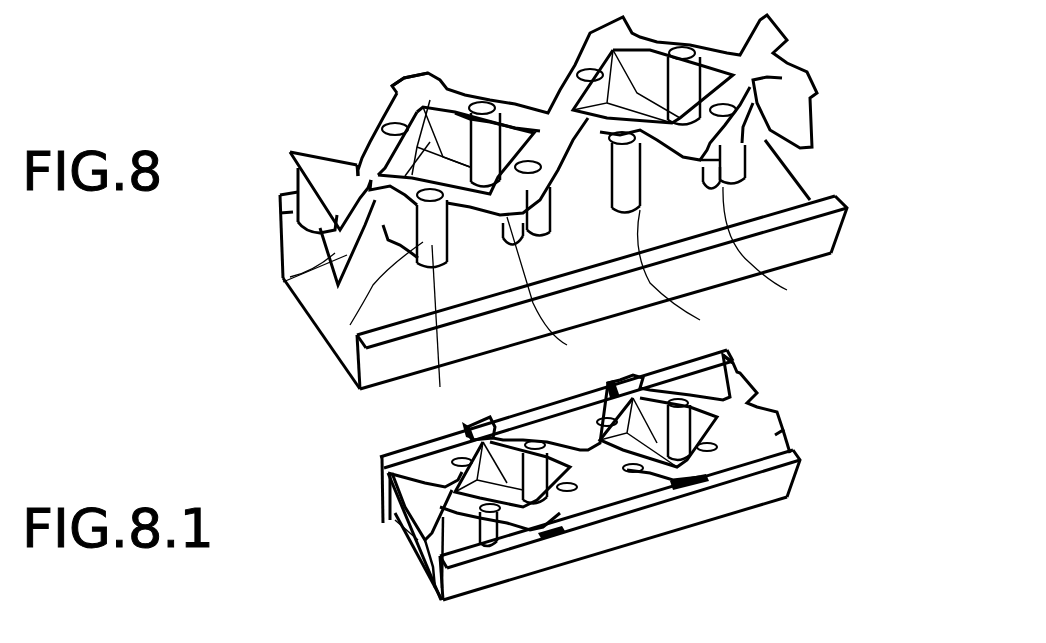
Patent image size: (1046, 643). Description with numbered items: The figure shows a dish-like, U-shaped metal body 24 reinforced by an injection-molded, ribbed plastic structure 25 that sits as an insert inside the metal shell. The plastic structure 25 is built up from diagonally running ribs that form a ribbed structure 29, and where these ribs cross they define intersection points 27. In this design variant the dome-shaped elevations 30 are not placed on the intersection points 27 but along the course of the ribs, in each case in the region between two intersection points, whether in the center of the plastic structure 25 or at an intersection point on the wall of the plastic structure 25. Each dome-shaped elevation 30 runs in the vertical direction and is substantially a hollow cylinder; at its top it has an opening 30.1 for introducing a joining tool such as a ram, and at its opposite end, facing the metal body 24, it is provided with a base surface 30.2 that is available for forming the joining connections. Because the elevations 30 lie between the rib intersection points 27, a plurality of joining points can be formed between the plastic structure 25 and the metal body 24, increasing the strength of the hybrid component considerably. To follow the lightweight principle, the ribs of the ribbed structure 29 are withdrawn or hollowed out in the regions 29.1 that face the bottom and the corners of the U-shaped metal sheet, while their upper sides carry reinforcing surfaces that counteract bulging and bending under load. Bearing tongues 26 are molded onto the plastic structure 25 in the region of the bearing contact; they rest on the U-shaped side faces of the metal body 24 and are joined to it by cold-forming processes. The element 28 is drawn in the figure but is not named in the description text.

In FIG. 8, the metal body 24 is at (326, 302).
In FIG. 8.1, the metal body 24 is at (387, 517).
In FIG. 8, the plastic structure 25 is at (423, 88).
In FIG. 8.1, the plastic structure 25 is at (405, 527).
In FIG. 8, the bearing tongues 26 is at (413, 88).
In FIG. 8, the intersection points 27 is at (362, 168).
In FIG. 8.1, the bearing wedge 28 is at (455, 421).
In FIG. 8, the ribbed structure 29 is at (283, 281).
In FIG. 8, the hollowed-out regions 29.1 is at (390, 235).
In FIG. 8, the dome-shaped elevations 30 is at (490, 90).
In FIG. 8.1, the dome-shaped elevations 30 is at (543, 438).
In FIG. 8.1, the opening 30.1 is at (723, 360).
In FIG. 8, the base surface 30.2 is at (454, 399).